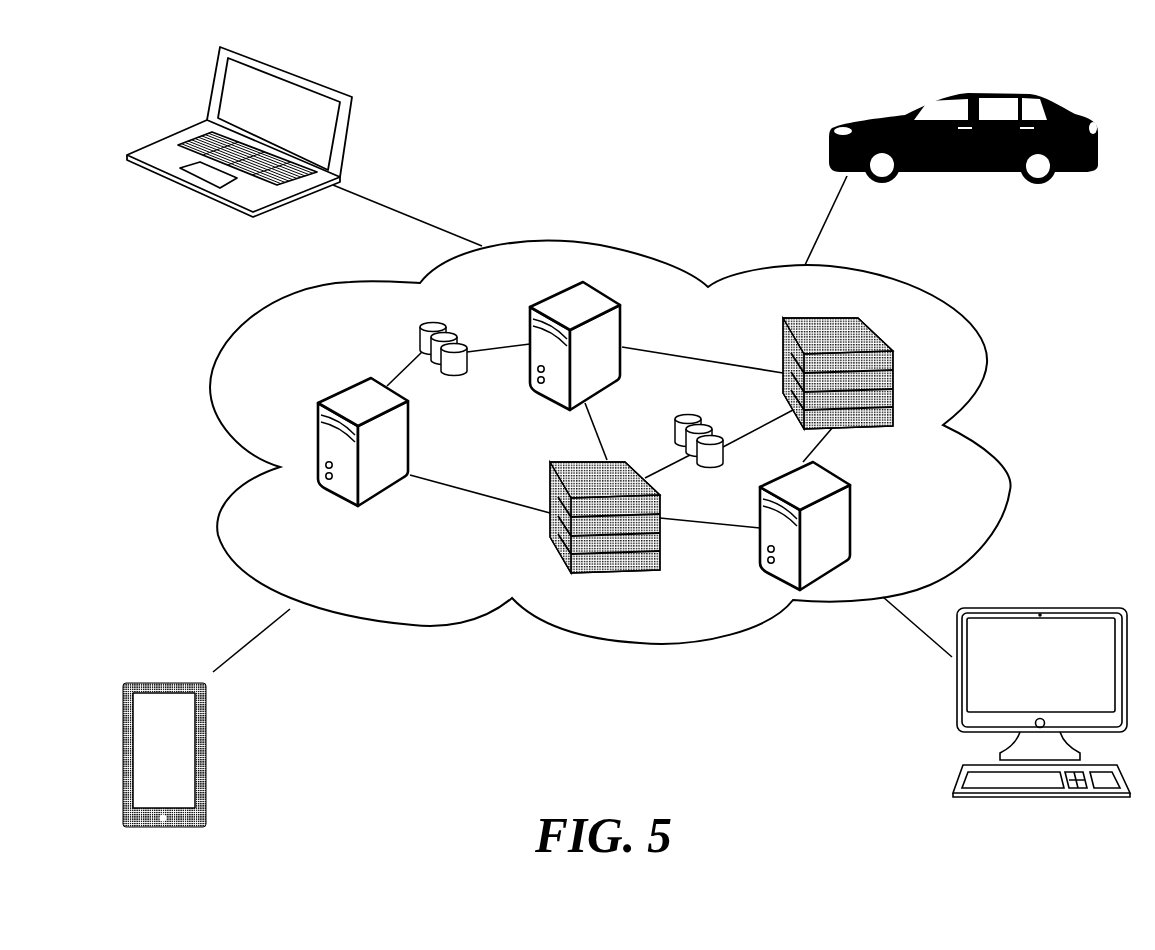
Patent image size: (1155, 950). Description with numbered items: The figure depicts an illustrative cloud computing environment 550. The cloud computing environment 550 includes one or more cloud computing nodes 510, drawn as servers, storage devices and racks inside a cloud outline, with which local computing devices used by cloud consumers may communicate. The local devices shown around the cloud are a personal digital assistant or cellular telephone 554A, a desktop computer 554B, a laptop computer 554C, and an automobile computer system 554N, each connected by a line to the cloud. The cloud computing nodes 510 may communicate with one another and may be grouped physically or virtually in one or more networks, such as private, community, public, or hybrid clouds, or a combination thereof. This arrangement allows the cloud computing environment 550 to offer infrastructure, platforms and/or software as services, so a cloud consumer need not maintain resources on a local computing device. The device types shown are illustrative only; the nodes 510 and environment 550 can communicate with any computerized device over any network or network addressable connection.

The cloud computing nodes 510 is at (662, 442).
The cloud computing environment 550 is at (247, 325).
The personal digital assistant (PDA) or cellular telephone 554A is at (163, 692).
The desktop computer 554B is at (1085, 608).
The laptop computer 554C is at (333, 92).
The automobile computer system 554N is at (967, 93).